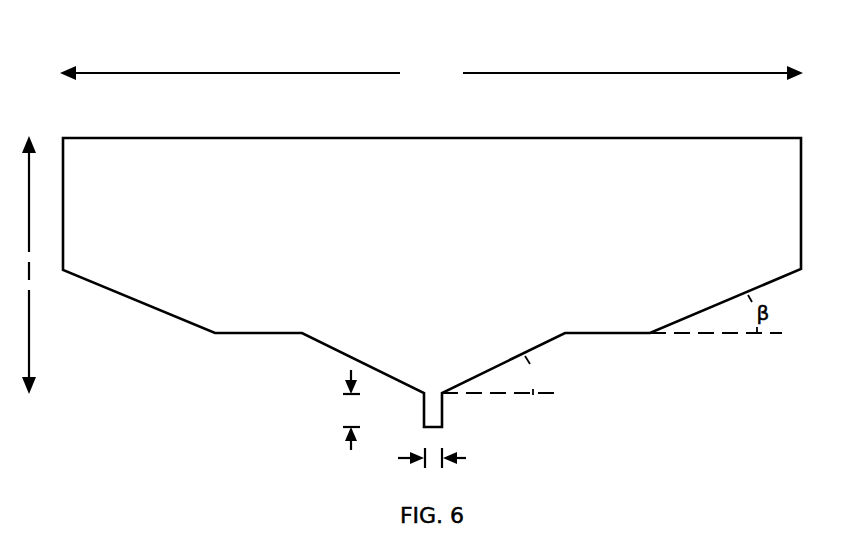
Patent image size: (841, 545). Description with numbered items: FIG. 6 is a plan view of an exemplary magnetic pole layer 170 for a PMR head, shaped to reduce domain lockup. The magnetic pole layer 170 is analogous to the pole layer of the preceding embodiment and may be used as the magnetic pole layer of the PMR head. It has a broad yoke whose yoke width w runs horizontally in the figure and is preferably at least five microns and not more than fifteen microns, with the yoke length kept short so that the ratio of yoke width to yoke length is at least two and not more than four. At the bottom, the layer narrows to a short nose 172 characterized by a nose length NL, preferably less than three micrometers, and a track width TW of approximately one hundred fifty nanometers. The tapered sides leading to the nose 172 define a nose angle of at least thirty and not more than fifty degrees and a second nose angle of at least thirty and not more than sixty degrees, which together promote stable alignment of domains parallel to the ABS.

The magnetic pole layer 170 is at (412, 33).
The nose 172 is at (565, 394).
The yoke width w is at (431, 73).
The nose length NL is at (350, 410).
The track width TW is at (432, 472).